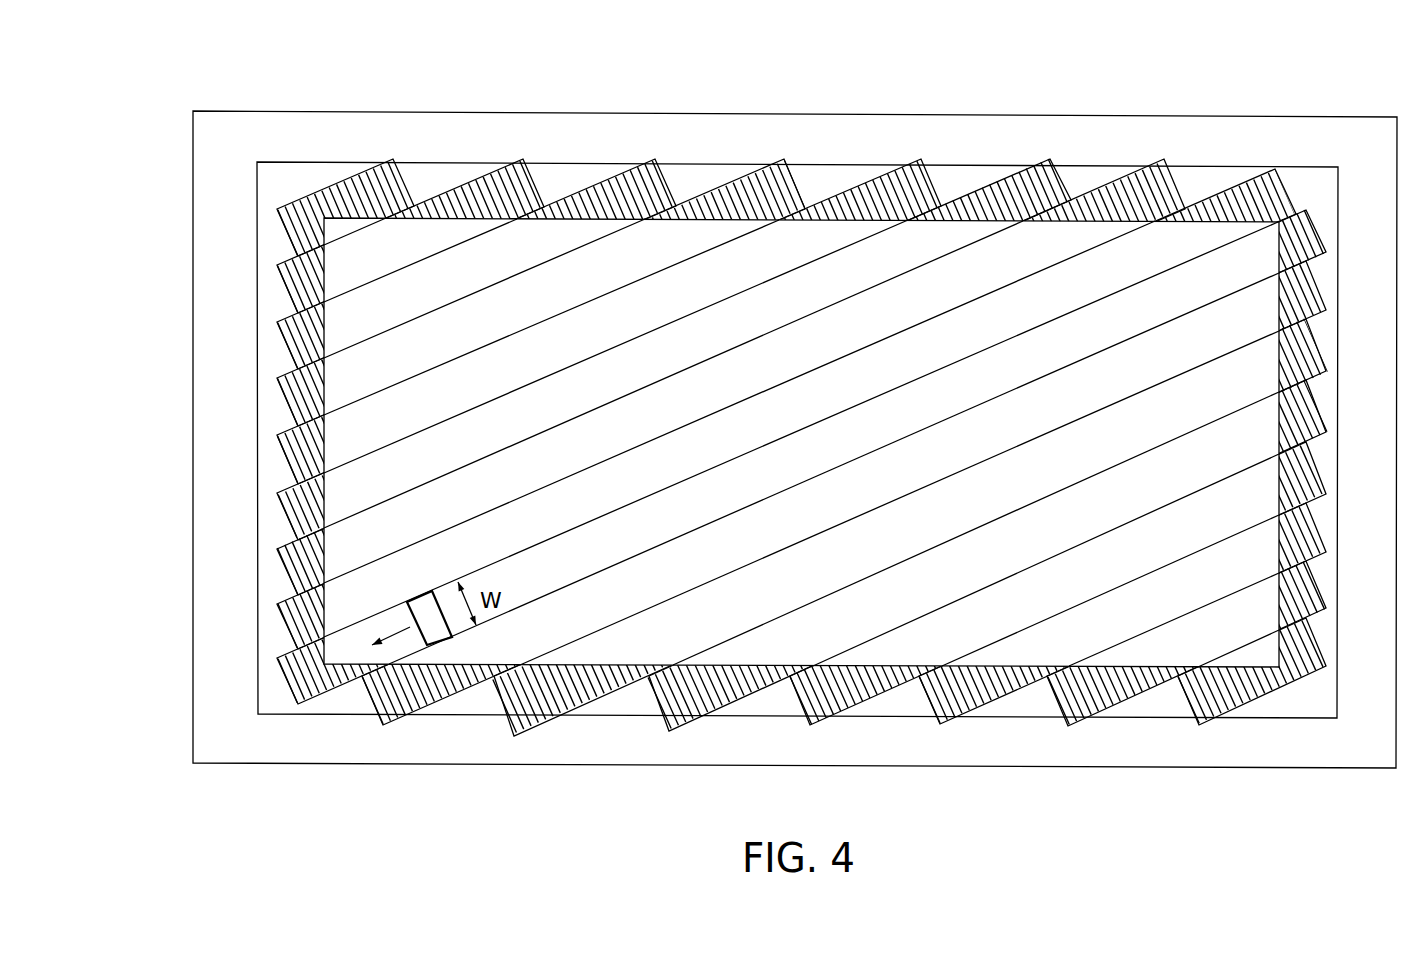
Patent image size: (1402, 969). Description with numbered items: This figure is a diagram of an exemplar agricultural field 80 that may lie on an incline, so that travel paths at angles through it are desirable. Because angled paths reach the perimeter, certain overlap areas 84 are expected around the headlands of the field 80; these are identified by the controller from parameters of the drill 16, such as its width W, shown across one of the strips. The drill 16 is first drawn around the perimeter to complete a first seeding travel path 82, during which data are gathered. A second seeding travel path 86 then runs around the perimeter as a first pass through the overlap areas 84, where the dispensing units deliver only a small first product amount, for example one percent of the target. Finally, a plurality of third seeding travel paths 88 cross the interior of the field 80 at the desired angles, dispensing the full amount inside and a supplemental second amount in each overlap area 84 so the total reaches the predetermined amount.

The drill 16 is at (442, 637).
The agricultural field 80 is at (311, 70).
The first seeding travel path 82 is at (690, 745).
The overlap areas 84 is at (803, 706).
The second seeding travel path 86 is at (900, 705).
The third seeding travel paths 88 is at (592, 560).